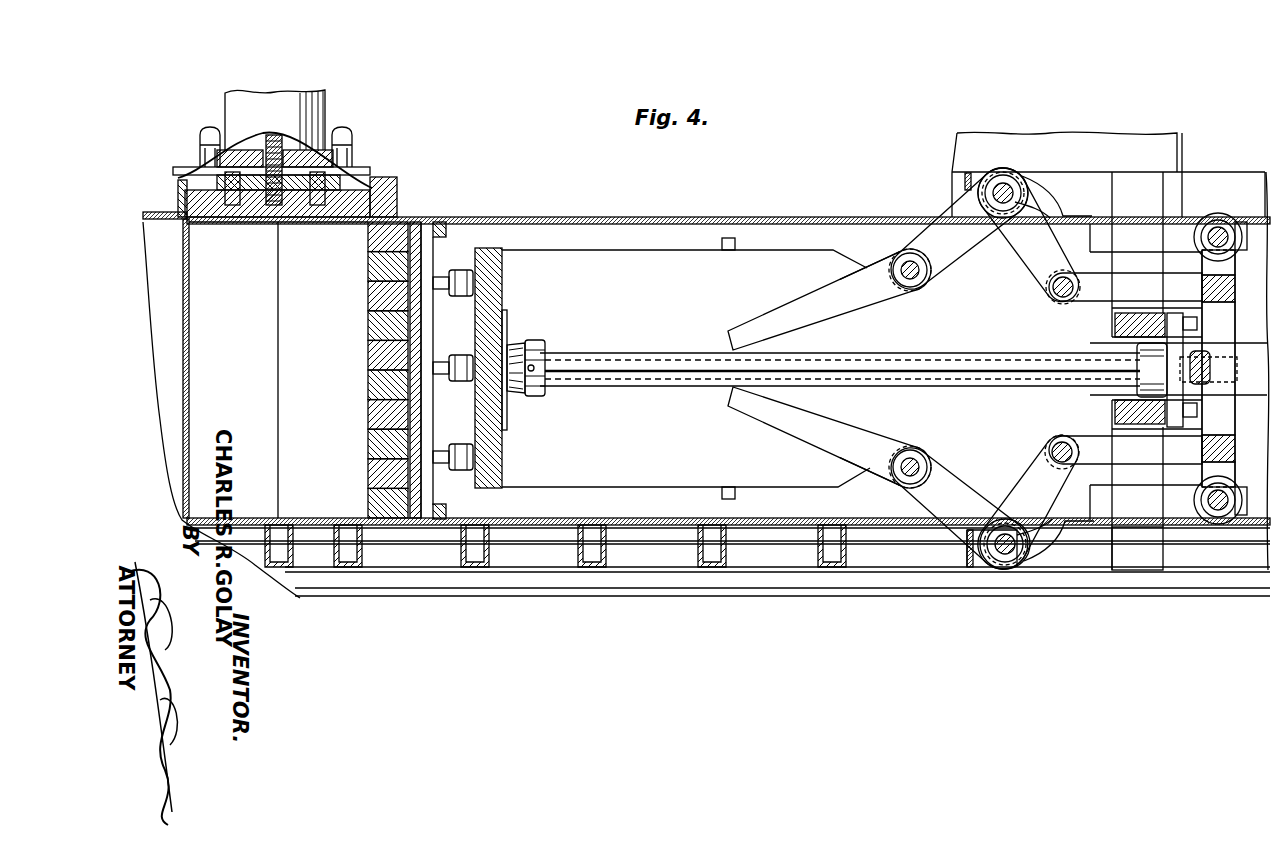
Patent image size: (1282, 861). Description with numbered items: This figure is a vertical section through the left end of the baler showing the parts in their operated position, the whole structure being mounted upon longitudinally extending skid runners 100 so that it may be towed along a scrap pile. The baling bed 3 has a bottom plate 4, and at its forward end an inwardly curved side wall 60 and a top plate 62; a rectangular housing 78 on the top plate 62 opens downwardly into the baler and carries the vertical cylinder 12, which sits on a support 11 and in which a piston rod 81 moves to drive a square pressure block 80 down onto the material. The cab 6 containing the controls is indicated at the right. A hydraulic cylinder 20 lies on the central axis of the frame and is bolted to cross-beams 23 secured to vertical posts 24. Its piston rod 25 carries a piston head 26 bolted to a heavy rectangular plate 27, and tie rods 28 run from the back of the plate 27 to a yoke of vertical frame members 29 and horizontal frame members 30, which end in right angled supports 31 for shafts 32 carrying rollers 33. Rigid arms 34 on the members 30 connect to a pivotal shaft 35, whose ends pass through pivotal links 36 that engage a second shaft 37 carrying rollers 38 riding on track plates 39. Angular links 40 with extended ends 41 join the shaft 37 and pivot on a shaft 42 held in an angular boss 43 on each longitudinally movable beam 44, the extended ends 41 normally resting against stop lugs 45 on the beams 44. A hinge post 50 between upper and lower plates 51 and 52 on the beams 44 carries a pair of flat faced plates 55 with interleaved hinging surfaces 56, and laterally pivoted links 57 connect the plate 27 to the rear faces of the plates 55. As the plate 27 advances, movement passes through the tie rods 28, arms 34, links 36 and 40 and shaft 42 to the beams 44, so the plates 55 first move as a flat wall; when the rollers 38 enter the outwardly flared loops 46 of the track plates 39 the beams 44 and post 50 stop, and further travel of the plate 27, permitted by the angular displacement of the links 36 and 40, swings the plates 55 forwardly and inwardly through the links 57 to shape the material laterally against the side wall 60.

The baling bed 3 is at (686, 368).
The bottom plate 4 is at (440, 512).
The cab 6 is at (1155, 133).
The support 11 is at (358, 176).
The vertical cylinder 12 is at (325, 108).
The hydraulic cylinder 20 is at (1212, 365).
The cross-beams 23 is at (1118, 328).
The vertical posts 24 is at (1115, 186).
The piston rod 25 is at (628, 388).
The piston head 26 is at (530, 342).
The rectangular plate 27 is at (493, 294).
The tie rods 28 is at (627, 368).
The vertical frame members 29 is at (1226, 406).
The horizontal frame members 30 is at (1237, 290).
The right angled supports 31 is at (1228, 264).
The shafts 32 is at (1218, 226).
The rollers 33 is at (1210, 215).
The rigid arms 34 is at (1100, 300).
The pivotal shaft 35 is at (1058, 296).
The pivotal links 36 is at (1040, 255).
The second shaft 37 is at (998, 186).
The rollers 38 is at (1030, 185).
The track plates 39 is at (1240, 224).
The angular links 40 is at (968, 256).
The extended ends 41 is at (760, 322).
The shaft 42 is at (907, 288).
The angular boss 43 is at (867, 268).
The longitudinally movable beams 44 is at (564, 237).
The stop lugs 45 is at (728, 237).
The outwardly flared loop 46 is at (1004, 188).
The hinge post 50 is at (435, 222).
The upper plate 51 is at (447, 231).
The lower plate 52 is at (447, 511).
The flat faced plates 55 is at (312, 500).
The interleaved hinging surfaces 56 is at (368, 306).
The laterally pivoted links 57 is at (441, 362).
The inwardly curved side wall 60 is at (640, 210).
The top plate 62 is at (147, 212).
The rectangular housing 78 is at (372, 186).
The pressure block 80 is at (398, 188).
The piston rod 81 is at (283, 150).
The skid runners 100 is at (863, 597).